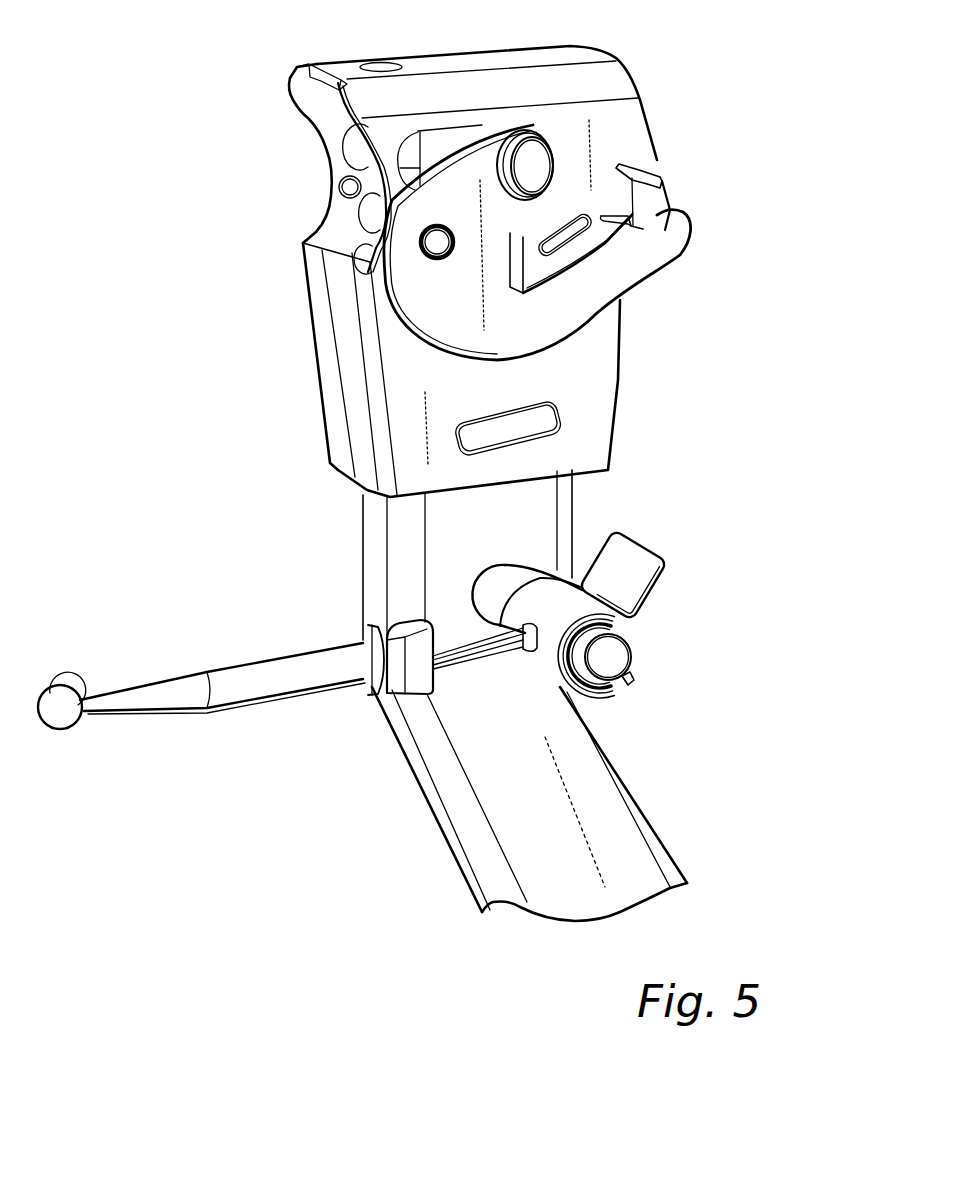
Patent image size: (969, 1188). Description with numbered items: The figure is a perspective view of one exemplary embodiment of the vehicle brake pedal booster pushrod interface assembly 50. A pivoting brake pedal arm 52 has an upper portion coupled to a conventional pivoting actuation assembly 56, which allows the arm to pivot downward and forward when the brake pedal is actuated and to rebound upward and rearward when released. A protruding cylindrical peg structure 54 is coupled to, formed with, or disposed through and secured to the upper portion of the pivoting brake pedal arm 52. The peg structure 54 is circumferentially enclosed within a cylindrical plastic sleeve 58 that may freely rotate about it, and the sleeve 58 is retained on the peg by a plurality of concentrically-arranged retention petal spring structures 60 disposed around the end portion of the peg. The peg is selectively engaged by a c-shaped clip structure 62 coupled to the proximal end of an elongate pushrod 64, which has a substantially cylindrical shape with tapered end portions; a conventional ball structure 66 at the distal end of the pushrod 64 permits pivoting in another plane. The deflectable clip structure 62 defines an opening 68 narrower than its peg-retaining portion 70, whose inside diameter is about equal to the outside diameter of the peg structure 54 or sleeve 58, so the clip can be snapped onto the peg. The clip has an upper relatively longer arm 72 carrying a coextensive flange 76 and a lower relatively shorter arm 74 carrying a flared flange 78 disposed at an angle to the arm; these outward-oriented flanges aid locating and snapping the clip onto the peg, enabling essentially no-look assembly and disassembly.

The booster pushrod interface assembly 50 is at (474, 523).
The pivoting brake pedal arm 52 is at (363, 550).
The peg structure 54 is at (524, 564).
The pivoting actuation assembly 56 is at (680, 106).
The cylindrical sleeve 58 is at (513, 572).
The retention petal spring structures 60 is at (618, 643).
The c-shaped clip structure 62 is at (512, 672).
The pushrod 64 is at (278, 697).
The ball structure 66 is at (72, 728).
The opening 68 is at (651, 655).
The peg-retaining portion 70 is at (570, 678).
The relatively longer arm 72 is at (685, 553).
The relatively shorter arm 74 is at (681, 722).
The coextensive flange 76 is at (662, 552).
The flared flange 78 is at (630, 683).